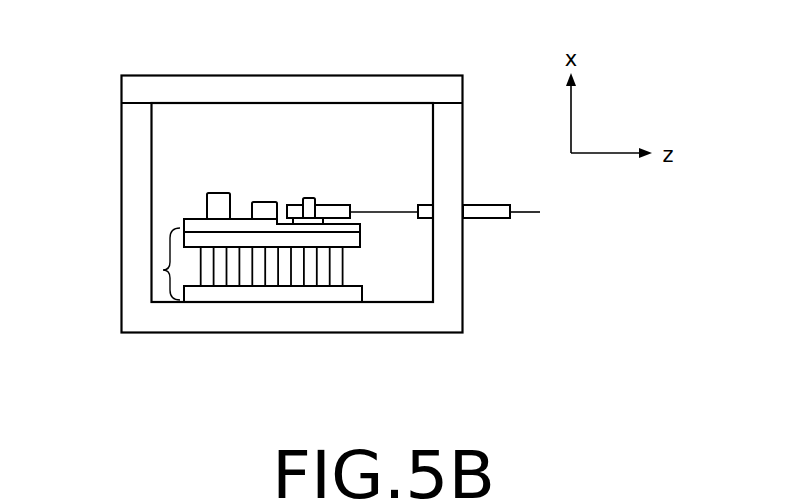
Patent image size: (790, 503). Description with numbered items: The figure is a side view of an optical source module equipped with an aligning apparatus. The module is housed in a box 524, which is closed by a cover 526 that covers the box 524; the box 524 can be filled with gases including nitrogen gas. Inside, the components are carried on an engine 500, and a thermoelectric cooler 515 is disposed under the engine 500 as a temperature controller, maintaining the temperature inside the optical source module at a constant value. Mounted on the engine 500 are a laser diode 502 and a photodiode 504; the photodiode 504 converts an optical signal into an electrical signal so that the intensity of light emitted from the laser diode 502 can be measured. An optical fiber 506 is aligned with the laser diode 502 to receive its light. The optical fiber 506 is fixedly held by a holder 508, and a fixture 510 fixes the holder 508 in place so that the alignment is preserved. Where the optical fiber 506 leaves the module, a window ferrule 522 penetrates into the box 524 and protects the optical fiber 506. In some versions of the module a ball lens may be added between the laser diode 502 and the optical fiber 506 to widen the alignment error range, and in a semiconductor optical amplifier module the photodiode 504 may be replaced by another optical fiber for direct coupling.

The cover 526 is at (291, 75).
The box 524 is at (128, 298).
The engine 500 is at (183, 237).
The thermoelectric cooler 515 is at (163, 270).
The photodiode 504 is at (215, 193).
The laser diode 502 is at (264, 202).
The fixture 510 is at (307, 198).
The holder 508 is at (335, 203).
The optical fiber 506 is at (388, 215).
The window ferrule 522 is at (497, 218).